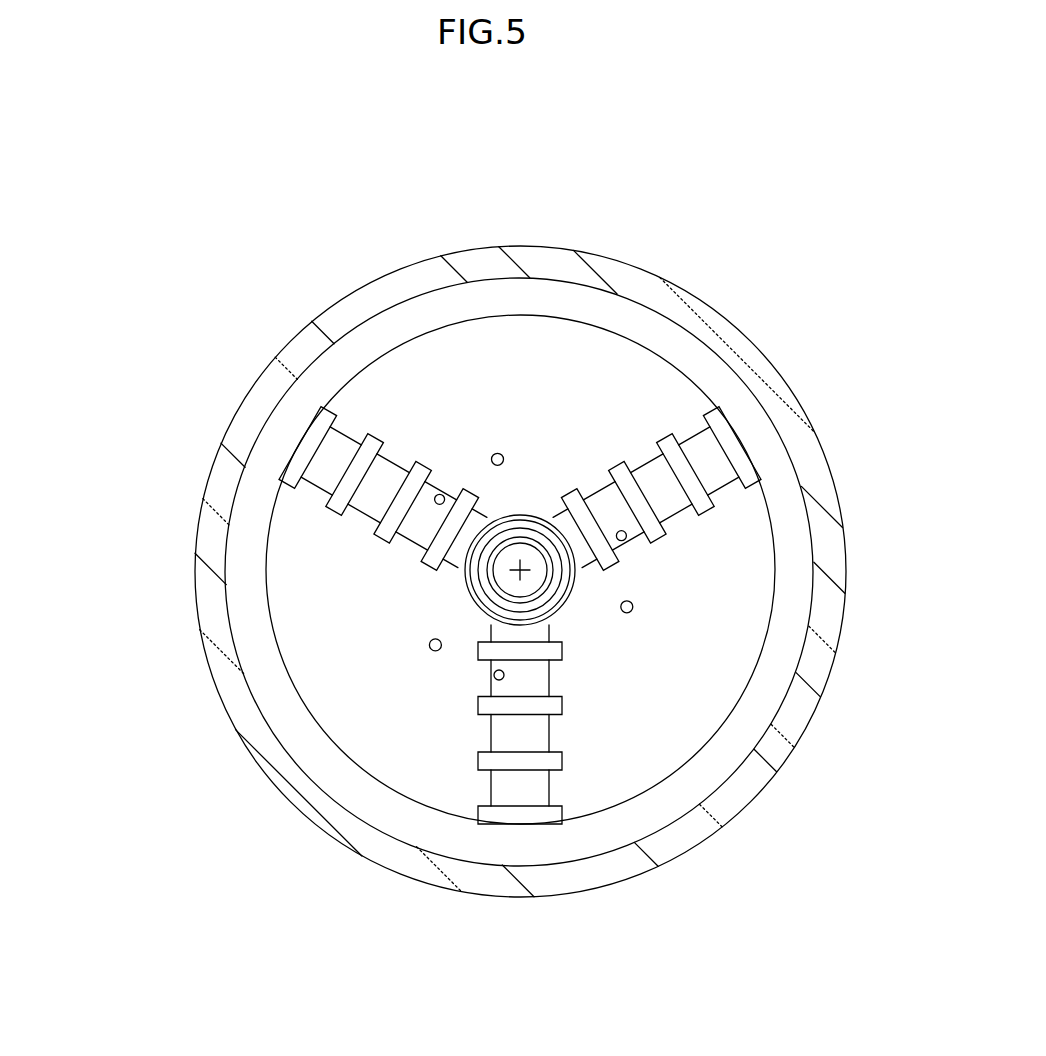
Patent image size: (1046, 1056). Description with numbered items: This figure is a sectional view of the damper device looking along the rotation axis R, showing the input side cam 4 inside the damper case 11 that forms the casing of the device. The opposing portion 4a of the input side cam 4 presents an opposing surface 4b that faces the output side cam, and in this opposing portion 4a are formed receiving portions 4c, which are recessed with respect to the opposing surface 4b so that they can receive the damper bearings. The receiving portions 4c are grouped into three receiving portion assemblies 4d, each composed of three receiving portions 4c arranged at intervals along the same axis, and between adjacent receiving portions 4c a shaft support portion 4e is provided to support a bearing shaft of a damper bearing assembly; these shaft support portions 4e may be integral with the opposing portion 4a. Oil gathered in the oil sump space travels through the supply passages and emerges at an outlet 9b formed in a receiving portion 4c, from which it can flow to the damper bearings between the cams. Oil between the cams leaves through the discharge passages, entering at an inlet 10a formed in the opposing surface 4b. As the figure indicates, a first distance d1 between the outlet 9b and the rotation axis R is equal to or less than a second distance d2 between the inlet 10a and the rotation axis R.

The input side cam 4 is at (287, 622).
The opposing portion 4a is at (603, 350).
The opposing surface 4b is at (541, 400).
The receiving portion 4c is at (343, 471).
The receiving portion assembly 4d is at (97, 512).
The shaft support portion 4e is at (455, 480).
The outlet 9b is at (441, 495).
The inlet 10a is at (498, 453).
The damper case 11 is at (730, 321).
The rotation axis R is at (520, 568).
The first distance d1 is at (520, 572).
The second distance d2 is at (435, 646).